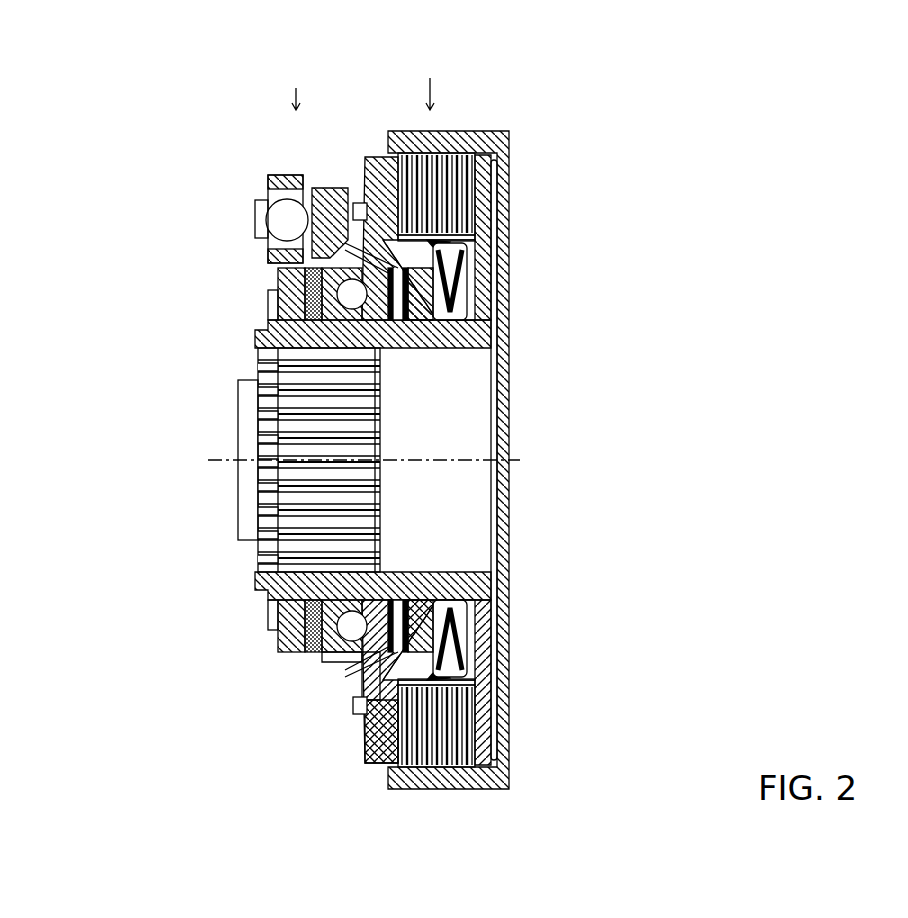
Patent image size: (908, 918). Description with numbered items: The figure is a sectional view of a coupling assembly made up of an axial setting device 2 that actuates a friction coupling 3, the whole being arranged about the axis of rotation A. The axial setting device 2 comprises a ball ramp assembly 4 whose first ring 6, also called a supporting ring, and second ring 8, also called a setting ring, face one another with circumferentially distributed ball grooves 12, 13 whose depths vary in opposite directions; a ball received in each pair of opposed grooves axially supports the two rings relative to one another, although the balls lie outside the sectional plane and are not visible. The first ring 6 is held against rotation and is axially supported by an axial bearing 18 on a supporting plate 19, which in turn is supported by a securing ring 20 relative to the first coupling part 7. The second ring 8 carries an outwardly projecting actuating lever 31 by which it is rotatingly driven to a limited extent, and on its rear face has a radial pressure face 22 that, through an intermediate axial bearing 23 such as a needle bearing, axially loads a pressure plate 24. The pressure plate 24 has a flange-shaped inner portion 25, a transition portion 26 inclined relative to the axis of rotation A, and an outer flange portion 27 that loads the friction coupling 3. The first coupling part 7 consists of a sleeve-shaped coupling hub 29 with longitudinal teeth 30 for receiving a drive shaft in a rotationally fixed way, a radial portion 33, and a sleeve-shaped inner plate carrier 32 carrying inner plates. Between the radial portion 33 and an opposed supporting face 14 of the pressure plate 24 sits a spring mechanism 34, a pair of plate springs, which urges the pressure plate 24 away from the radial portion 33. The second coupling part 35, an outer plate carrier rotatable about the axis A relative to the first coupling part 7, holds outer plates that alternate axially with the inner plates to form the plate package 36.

The axial setting device 2 is at (295, 79).
The friction coupling 3 is at (429, 73).
The ball ramp assembly 4 is at (345, 243).
The first ring 6 is at (333, 645).
The first coupling part 7 is at (485, 586).
The second ring 8 is at (395, 600).
The ball groove 12 is at (348, 650).
The ball groove 13 is at (385, 568).
The supporting face 14 is at (455, 610).
The axial bearing 18 is at (307, 632).
The supporting plate 19 is at (283, 636).
The securing ring 20 is at (268, 622).
The radial pressure face 22 is at (402, 325).
The axial bearing 23 is at (433, 575).
The pressure plate 24 is at (403, 253).
The inner portion 25 is at (445, 325).
The transition portion 26 is at (425, 240).
The outer flange portion 27 is at (385, 745).
The coupling hub 29 is at (300, 557).
The longitudinal teeth 30 is at (300, 505).
The actuating lever 31 is at (330, 200).
The inner plate carrier 32 is at (460, 680).
The radial portion 33 is at (488, 313).
The spring mechanism 34 is at (470, 282).
The second coupling part 35 is at (480, 770).
The plate package 36 is at (450, 720).
The axis of rotation A is at (470, 460).